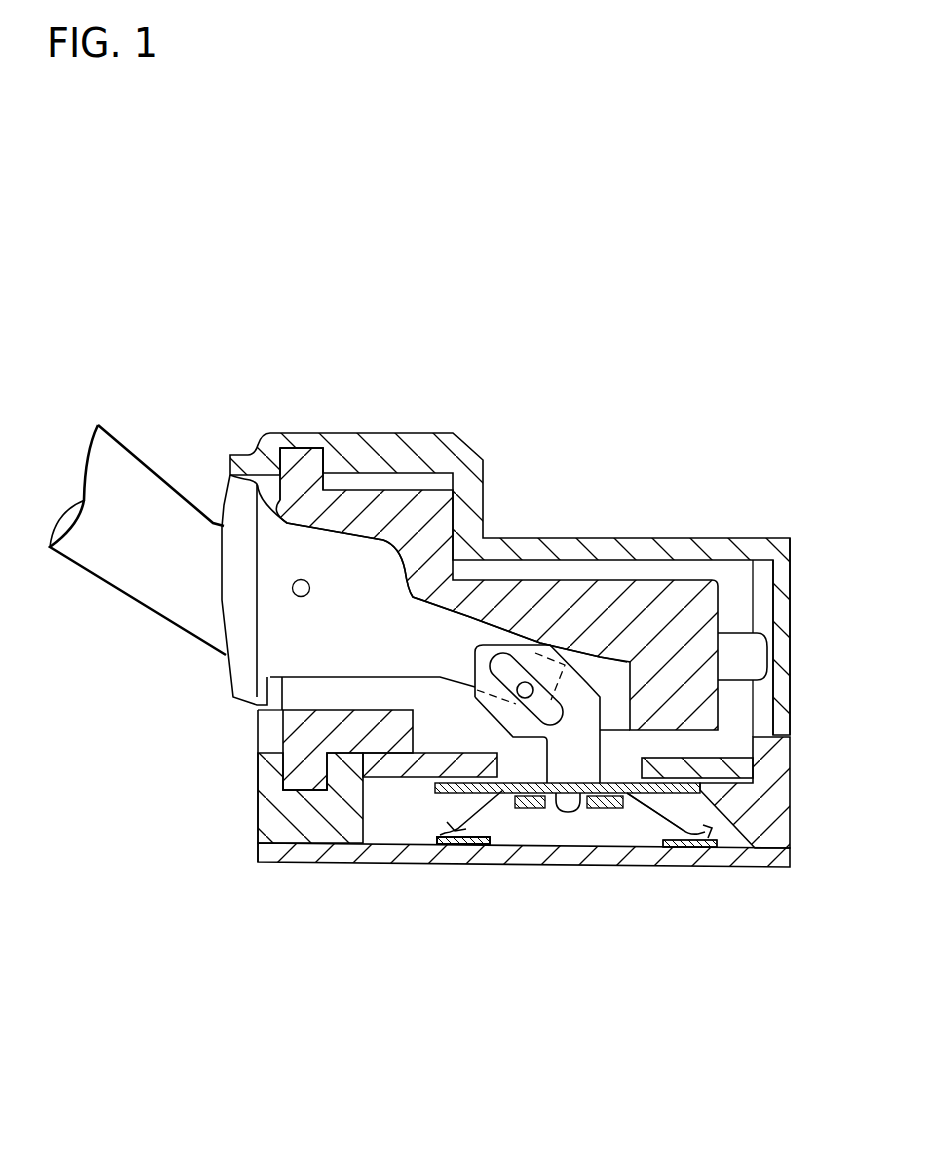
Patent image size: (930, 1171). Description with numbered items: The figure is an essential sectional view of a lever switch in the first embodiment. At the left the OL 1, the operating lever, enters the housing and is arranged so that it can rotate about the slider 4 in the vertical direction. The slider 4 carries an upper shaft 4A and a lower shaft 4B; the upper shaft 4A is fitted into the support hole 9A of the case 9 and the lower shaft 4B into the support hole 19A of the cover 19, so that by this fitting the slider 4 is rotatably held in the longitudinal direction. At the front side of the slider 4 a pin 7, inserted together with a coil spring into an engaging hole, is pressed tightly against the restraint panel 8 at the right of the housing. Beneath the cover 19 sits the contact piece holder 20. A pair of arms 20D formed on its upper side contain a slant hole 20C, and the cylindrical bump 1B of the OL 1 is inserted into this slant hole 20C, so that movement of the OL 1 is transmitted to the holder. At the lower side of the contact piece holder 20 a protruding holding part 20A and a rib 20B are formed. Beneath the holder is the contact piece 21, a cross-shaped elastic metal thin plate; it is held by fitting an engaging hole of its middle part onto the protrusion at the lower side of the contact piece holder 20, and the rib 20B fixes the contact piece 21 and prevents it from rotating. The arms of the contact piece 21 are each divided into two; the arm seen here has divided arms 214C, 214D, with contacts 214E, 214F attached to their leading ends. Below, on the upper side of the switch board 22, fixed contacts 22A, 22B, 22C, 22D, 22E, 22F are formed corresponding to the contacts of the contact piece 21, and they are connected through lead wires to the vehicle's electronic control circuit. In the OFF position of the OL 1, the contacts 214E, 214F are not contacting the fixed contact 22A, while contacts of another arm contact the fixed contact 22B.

The OL 1 is at (117, 455).
The cylindrical bump 1B is at (525, 682).
The slider 4 is at (598, 595).
The upper shaft 4A is at (328, 443).
The lower shaft 4B is at (298, 738).
The pin 7 is at (739, 650).
The restraint panel 8 is at (768, 565).
The case 9 is at (397, 450).
The support hole 9A is at (290, 443).
The cover 19 is at (293, 827).
The support hole 19A is at (284, 780).
The contact piece holder 20 is at (702, 800).
The protruding holding part 20A is at (557, 817).
The rib 20B is at (518, 812).
The slant hole 20C is at (503, 657).
The arms 20D is at (573, 697).
The contact piece 21 is at (585, 812).
The switch board 22 is at (268, 855).
The fixed contact 22A is at (440, 843).
The fixed contact 22B is at (422, 915).
The fixed contact 22C is at (422, 929).
The fixed contact 22D is at (422, 943).
The fixed contact 22E is at (422, 957).
The fixed contact 22F is at (422, 971).
The divided arm 214C is at (655, 823).
The divided arm 214D is at (636, 877).
The contact 214E is at (700, 847).
The contact 214F is at (716, 914).